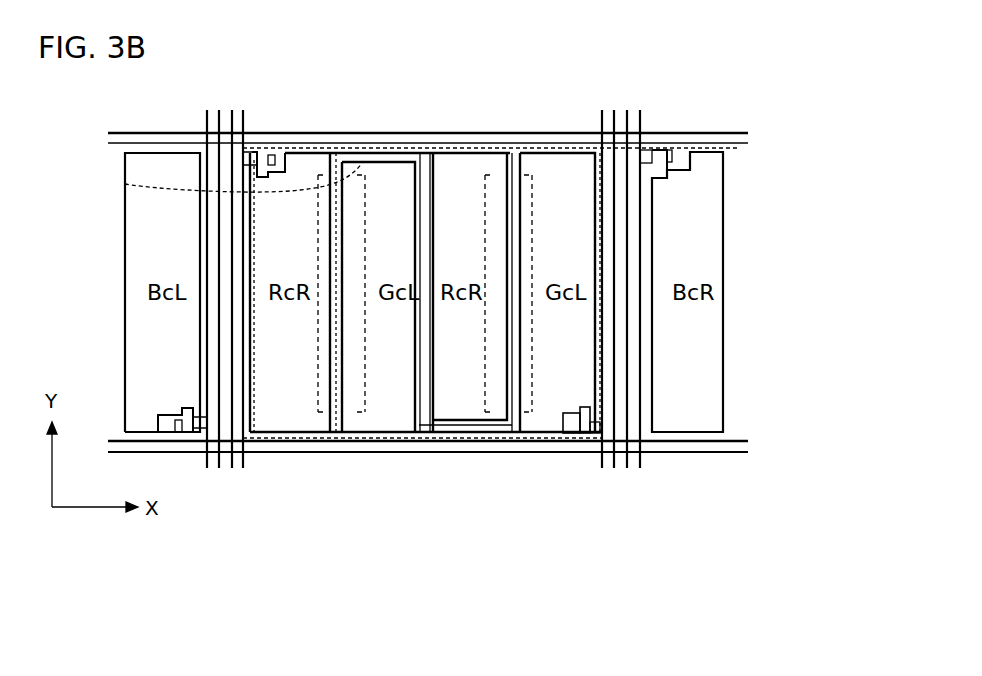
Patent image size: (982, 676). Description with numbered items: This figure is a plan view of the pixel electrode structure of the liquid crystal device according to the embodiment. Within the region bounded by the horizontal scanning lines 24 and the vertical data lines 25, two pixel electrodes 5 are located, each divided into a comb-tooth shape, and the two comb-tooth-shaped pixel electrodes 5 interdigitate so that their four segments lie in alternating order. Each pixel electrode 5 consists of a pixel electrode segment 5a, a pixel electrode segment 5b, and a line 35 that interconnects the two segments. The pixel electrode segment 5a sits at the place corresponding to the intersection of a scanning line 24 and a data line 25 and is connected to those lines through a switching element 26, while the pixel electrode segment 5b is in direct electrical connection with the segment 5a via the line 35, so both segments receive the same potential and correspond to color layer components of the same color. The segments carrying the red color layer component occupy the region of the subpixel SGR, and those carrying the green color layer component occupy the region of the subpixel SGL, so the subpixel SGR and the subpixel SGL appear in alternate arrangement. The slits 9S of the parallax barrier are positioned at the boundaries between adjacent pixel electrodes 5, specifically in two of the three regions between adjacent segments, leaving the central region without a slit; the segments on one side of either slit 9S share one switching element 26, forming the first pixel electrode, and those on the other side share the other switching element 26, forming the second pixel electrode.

The pixel electrode 5 is at (418, 224).
The pixel electrode segment 5a is at (305, 162).
The pixel electrode segment 5b is at (447, 162).
The scanning line 24 is at (750, 138).
The data line 25 is at (207, 470).
The switching element 26 is at (283, 165).
The line 35 is at (125, 184).
The slit 9S is at (328, 450).
The subpixel SGR is at (283, 447).
The subpixel SGL is at (380, 447).